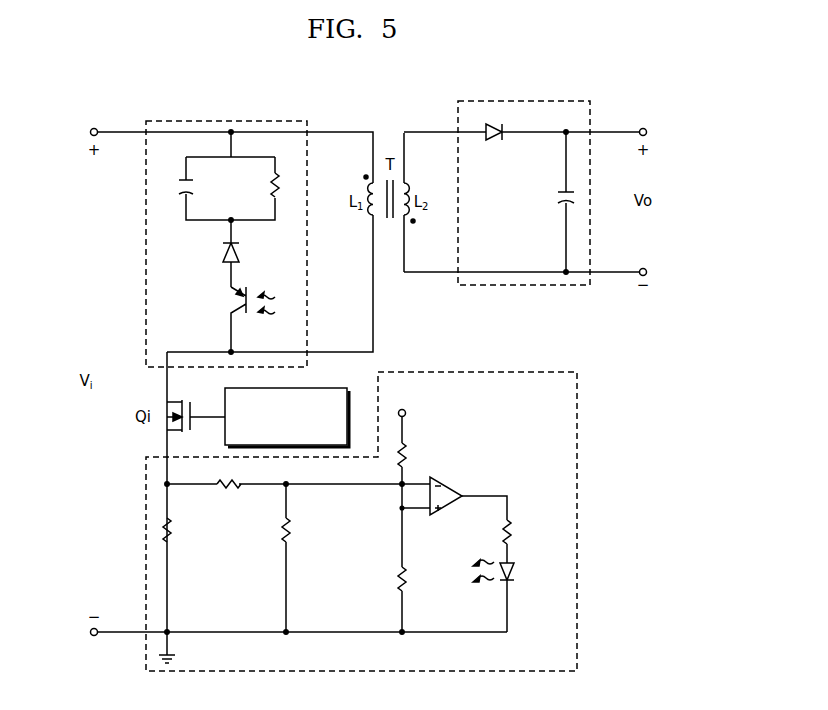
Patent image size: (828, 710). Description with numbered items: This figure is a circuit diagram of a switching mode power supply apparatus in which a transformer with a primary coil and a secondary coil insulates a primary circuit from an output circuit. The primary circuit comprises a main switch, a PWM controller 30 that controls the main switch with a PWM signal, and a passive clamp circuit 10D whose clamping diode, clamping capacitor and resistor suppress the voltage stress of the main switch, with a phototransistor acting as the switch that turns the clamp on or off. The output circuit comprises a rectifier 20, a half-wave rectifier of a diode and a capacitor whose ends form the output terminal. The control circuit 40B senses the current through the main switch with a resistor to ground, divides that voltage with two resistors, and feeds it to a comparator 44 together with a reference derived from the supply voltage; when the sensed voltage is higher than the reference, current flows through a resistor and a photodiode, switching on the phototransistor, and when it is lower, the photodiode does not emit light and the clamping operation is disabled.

The snubber circuit 10D is at (246, 116).
The rectifier 20 is at (590, 114).
The PWM controller 30 is at (318, 388).
The control circuit 40B is at (474, 372).
The comparator 44 is at (450, 479).